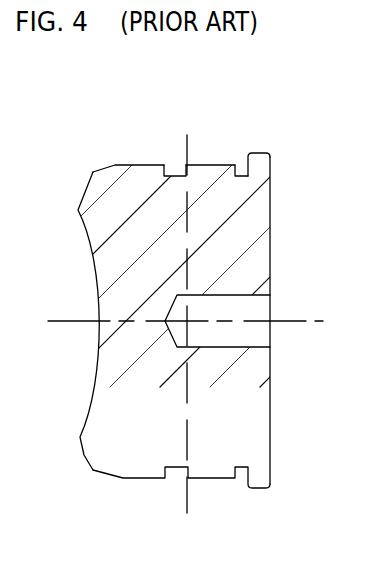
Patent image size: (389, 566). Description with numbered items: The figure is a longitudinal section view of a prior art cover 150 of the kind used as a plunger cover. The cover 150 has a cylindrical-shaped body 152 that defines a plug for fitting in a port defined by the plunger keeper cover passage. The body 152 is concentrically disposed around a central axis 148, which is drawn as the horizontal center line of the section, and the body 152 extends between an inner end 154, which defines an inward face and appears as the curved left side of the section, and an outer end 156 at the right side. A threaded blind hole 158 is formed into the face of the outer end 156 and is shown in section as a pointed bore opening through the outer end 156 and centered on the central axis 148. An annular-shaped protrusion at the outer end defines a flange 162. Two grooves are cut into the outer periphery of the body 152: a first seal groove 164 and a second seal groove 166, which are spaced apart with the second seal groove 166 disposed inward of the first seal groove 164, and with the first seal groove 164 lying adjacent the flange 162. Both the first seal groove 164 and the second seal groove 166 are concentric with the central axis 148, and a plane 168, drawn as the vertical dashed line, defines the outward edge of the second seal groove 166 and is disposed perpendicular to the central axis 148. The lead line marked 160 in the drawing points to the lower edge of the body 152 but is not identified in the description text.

The central axis 148 is at (78, 323).
The prior art cover 150 is at (78, 118).
The body 152 is at (245, 228).
The inner end 154 is at (93, 272).
The outer end 156 is at (270, 260).
The threaded blind hole 158 is at (260, 347).
The bottom surface 160 is at (152, 478).
The flange 162 is at (258, 162).
The first seal groove 164 is at (238, 165).
The second seal groove 166 is at (183, 166).
The plane 168 is at (188, 495).